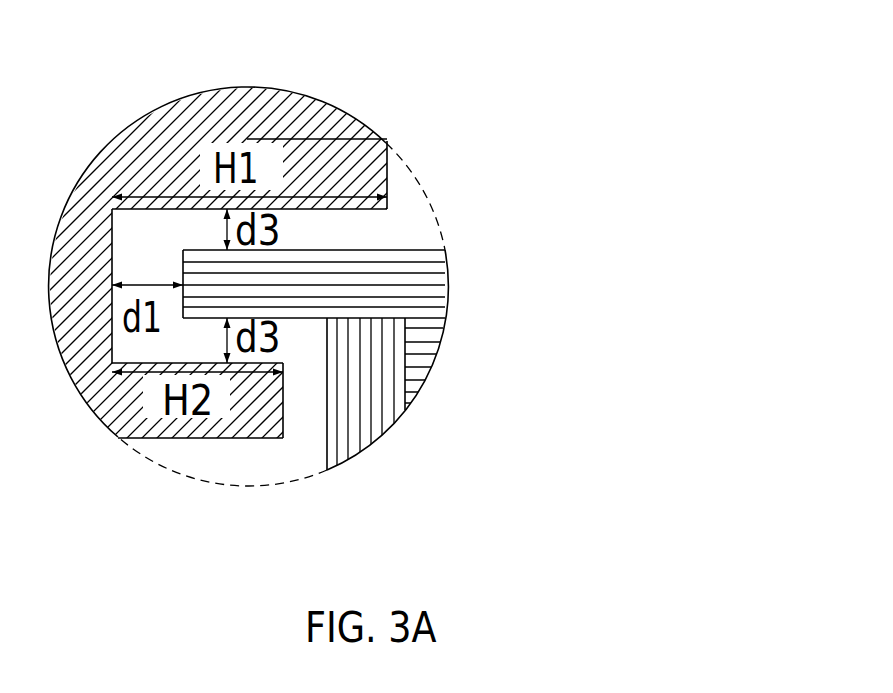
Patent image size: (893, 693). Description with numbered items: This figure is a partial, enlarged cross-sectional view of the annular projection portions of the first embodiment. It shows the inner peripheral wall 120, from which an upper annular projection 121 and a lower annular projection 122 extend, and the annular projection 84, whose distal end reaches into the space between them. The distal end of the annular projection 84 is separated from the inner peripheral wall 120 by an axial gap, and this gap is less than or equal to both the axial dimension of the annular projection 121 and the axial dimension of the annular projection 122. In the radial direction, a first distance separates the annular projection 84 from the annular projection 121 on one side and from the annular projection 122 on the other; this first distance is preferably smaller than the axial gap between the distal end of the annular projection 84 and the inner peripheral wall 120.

The inner peripheral wall 120 is at (113, 235).
The annular projection 121 is at (517, 118).
The annular projection 122 is at (282, 520).
The annular projection 84 is at (518, 252).